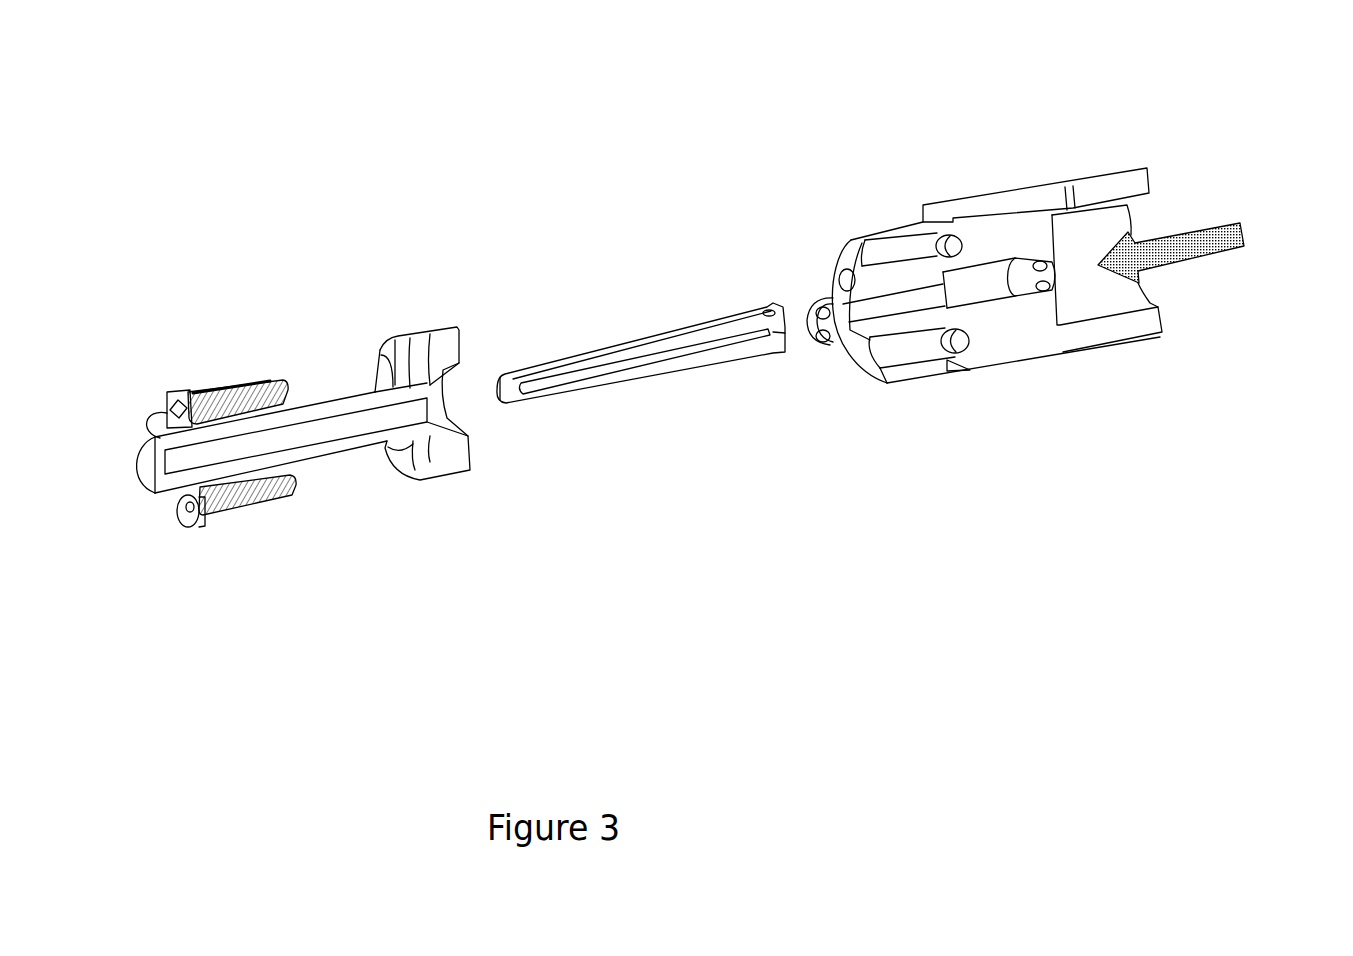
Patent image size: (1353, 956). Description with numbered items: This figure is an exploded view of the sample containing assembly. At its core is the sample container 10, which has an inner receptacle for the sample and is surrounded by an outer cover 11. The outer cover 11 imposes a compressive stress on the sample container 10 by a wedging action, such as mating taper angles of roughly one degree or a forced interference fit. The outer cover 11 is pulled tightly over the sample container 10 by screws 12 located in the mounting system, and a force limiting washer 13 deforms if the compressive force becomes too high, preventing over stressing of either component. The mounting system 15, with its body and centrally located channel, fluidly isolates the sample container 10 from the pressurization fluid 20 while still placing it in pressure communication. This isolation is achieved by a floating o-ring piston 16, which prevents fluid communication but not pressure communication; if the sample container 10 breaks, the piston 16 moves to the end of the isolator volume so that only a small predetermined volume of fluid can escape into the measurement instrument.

The sample container 10 is at (547, 403).
The outer cover 11 is at (340, 455).
The screws 12 is at (193, 507).
The force limiting washer 13 is at (795, 300).
The mounting system 15 is at (976, 185).
The floating o-ring piston 16 is at (1027, 295).
The pressurization fluid 20 is at (1233, 253).